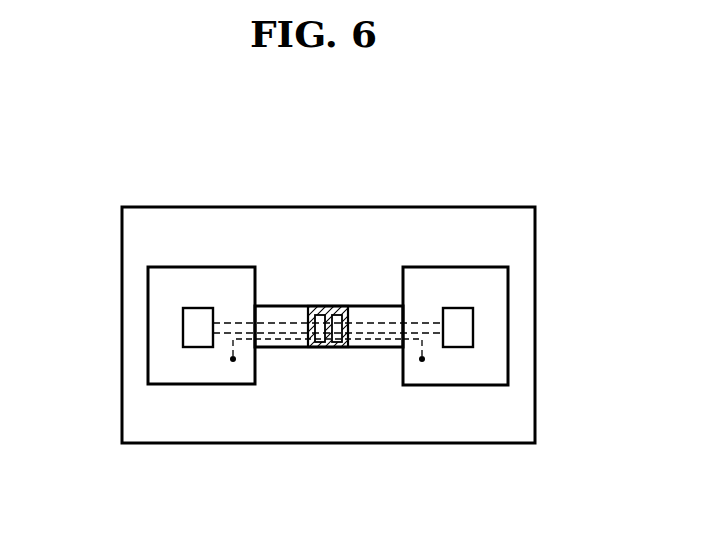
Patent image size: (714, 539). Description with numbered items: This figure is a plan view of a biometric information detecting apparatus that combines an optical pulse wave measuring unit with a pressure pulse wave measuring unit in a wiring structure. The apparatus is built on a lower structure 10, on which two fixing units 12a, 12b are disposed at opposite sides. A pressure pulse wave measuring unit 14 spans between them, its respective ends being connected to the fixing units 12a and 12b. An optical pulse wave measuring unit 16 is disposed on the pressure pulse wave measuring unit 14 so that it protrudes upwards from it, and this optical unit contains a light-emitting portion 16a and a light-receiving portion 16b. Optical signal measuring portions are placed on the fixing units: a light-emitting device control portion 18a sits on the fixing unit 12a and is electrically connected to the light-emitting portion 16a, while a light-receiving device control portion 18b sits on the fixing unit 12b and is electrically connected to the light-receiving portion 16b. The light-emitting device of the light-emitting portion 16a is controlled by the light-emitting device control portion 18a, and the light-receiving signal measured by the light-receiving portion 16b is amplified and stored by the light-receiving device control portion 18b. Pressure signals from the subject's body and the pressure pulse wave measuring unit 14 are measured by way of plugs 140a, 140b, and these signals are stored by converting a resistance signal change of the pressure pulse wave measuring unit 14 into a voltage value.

The lower structure 10 is at (470, 227).
The fixing unit 12a is at (172, 376).
The fixing unit 12b is at (493, 376).
The pressure pulse wave measuring unit 14 is at (279, 305).
The optical pulse wave measuring unit 16 is at (331, 331).
The light-emitting portion 16a is at (313, 348).
The light-receiving portion 16b is at (335, 348).
The light-emitting device control portion 18a is at (190, 330).
The light-receiving device control portion 18b is at (467, 331).
The plug 140a is at (233, 360).
The plug 140b is at (422, 360).